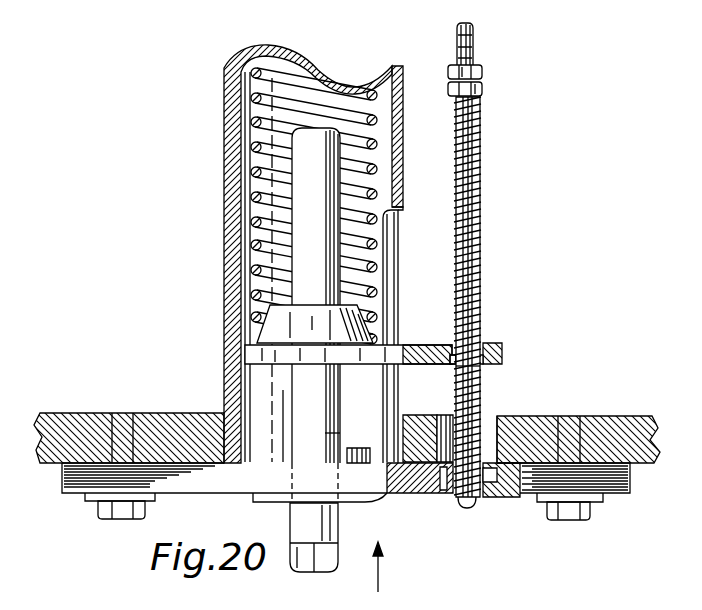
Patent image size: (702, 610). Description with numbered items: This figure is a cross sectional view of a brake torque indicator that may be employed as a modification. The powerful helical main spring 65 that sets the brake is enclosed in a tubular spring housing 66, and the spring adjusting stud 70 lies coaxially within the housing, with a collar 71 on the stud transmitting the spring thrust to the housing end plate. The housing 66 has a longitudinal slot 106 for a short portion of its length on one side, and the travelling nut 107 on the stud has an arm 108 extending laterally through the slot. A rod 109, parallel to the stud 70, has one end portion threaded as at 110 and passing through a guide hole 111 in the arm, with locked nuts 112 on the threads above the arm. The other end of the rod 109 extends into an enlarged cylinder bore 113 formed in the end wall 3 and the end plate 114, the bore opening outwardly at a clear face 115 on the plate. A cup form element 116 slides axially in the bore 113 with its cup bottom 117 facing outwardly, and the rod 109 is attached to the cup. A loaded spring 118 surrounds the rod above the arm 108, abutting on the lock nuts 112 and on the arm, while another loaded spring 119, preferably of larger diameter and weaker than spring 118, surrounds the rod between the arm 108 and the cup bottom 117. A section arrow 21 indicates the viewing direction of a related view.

The end wall 3 is at (598, 425).
The section line arrow 21 is at (376, 567).
The helical main spring 65 is at (378, 171).
The tubular spring housing 66 is at (396, 145).
The stud 70 is at (326, 432).
The collar 71 is at (348, 448).
The longitudinal slot 106 is at (393, 243).
The travelling nut 107 is at (254, 333).
The arm 108 is at (503, 349).
The rod 109 is at (465, 267).
The threads 110 is at (473, 53).
The guide hole 111 is at (491, 348).
The lock nuts 112 is at (483, 77).
The cylinder bore 113 is at (489, 427).
The end plate 114 is at (530, 490).
The clear face 115 is at (492, 505).
The cup form element 116 is at (415, 496).
The cup bottom 117 is at (453, 508).
The loaded spring 118 is at (473, 192).
The loaded spring 119 is at (480, 378).